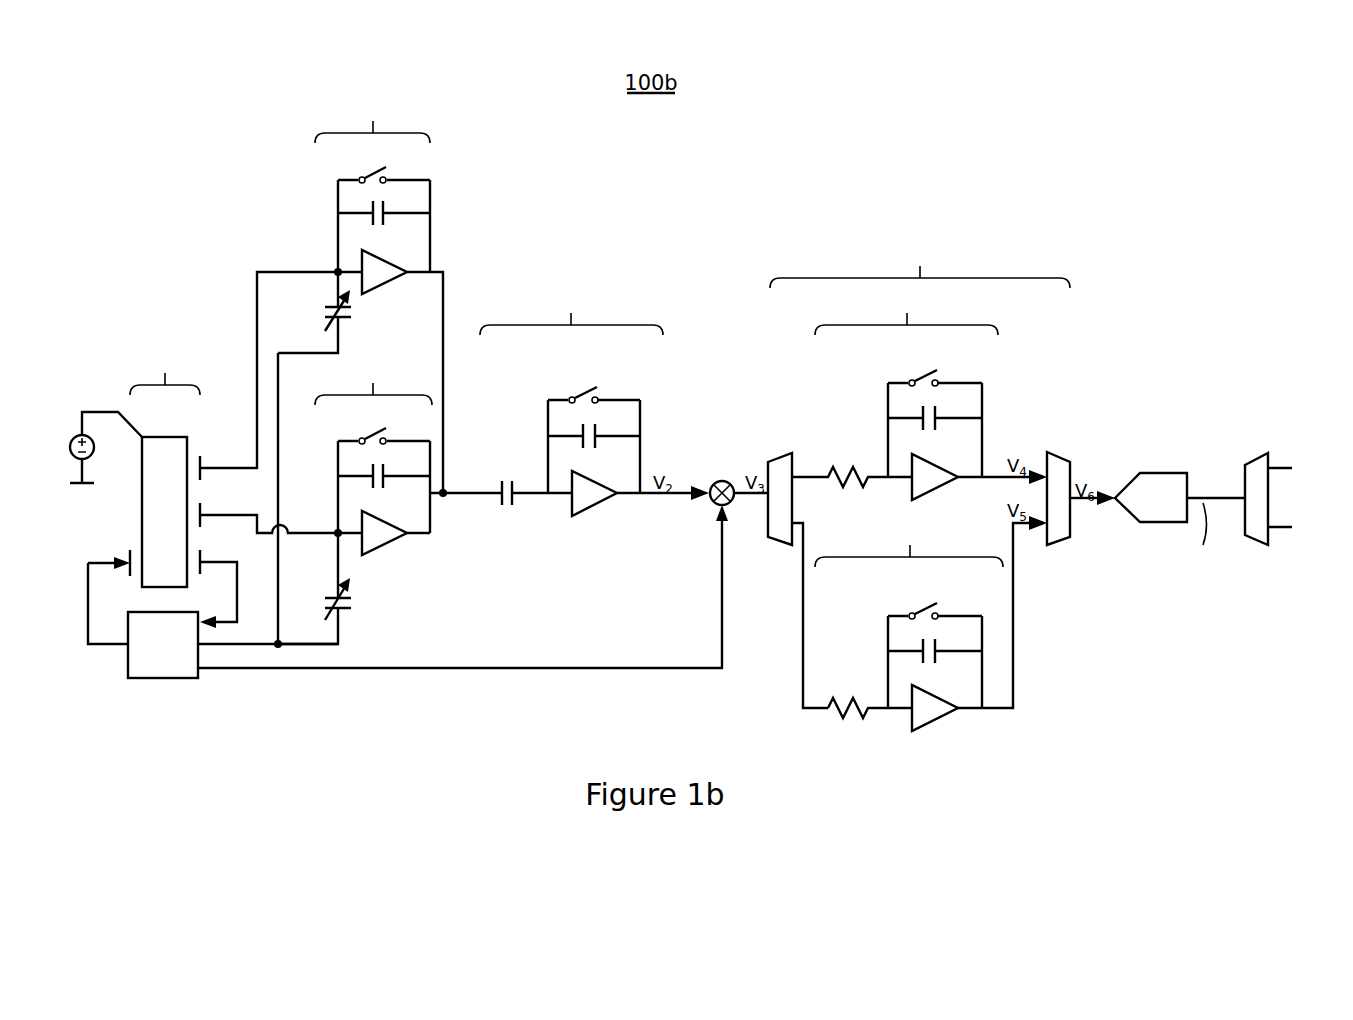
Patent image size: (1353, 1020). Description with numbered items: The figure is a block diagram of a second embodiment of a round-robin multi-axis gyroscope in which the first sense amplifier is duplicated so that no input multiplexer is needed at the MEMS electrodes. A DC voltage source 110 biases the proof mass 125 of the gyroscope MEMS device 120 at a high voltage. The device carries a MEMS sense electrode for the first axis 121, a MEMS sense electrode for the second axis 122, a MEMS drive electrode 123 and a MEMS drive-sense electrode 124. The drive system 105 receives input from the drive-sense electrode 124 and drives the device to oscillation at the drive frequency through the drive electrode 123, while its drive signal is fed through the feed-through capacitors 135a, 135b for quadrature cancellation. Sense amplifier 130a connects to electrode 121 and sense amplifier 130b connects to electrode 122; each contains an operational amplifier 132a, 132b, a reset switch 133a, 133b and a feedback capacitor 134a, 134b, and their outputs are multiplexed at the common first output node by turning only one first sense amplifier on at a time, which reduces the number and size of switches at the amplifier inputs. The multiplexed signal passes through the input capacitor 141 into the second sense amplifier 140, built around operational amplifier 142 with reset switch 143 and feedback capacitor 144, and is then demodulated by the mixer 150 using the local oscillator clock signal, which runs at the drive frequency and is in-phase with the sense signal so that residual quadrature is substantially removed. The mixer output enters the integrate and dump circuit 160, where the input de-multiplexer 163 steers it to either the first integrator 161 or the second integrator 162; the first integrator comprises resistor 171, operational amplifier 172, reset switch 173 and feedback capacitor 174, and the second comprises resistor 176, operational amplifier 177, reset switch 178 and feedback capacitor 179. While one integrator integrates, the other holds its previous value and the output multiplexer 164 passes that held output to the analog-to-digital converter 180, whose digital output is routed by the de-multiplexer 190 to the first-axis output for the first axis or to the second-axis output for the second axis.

The drive system 105 is at (165, 688).
The DC voltage source 110 is at (73, 435).
The gyroscope MEMS device 120 is at (198, 458).
The MEMS sense electrode for the first axis 121 is at (212, 460).
The MEMS sense electrode for the second axis 122 is at (210, 507).
The MEMS drive electrode 123 is at (122, 555).
The MEMS drive-sense electrode 124 is at (210, 558).
The proof mass 125 is at (137, 528).
The first sense amplifier 130a is at (360, 372).
The first sense amplifier 130b is at (362, 504).
The operational amplifier 132a is at (396, 279).
The operational amplifier 132b is at (386, 560).
The reset switch 133a is at (373, 174).
The reset switch 133b is at (373, 435).
The feedback capacitor 134a is at (379, 228).
The feedback capacitor 134b is at (379, 491).
The feed-through capacitor 135a is at (345, 323).
The feed-through capacitor 135b is at (348, 615).
The second sense amplifier 140 is at (576, 428).
The input capacitor 141 is at (508, 473).
The operational amplifier 142 is at (595, 518).
The reset switch 143 is at (582, 388).
The feedback capacitor 144 is at (588, 450).
The mixer 150 is at (716, 480).
The integrate and dump circuit 160 is at (920, 501).
The first integrator 161 is at (919, 407).
The second integrator 162 is at (919, 636).
The input de-multiplexer 163 is at (777, 455).
The output multiplexer 164 is at (1060, 455).
The resistor 171 is at (850, 462).
The operational amplifier 172 is at (943, 490).
The reset switch 173 is at (925, 370).
The feedback capacitor 174 is at (930, 432).
The resistor 176 is at (850, 696).
The operational amplifier 177 is at (942, 722).
The reset switch 178 is at (925, 602).
The feedback capacitor 179 is at (930, 665).
The analog-to-digital converter 180 is at (1166, 470).
The de-multiplexer 190 is at (1258, 455).